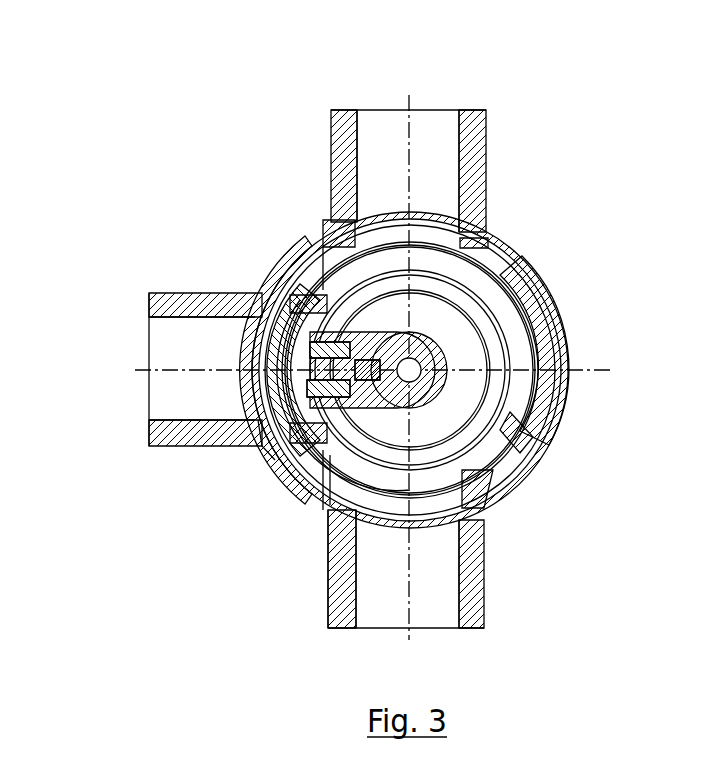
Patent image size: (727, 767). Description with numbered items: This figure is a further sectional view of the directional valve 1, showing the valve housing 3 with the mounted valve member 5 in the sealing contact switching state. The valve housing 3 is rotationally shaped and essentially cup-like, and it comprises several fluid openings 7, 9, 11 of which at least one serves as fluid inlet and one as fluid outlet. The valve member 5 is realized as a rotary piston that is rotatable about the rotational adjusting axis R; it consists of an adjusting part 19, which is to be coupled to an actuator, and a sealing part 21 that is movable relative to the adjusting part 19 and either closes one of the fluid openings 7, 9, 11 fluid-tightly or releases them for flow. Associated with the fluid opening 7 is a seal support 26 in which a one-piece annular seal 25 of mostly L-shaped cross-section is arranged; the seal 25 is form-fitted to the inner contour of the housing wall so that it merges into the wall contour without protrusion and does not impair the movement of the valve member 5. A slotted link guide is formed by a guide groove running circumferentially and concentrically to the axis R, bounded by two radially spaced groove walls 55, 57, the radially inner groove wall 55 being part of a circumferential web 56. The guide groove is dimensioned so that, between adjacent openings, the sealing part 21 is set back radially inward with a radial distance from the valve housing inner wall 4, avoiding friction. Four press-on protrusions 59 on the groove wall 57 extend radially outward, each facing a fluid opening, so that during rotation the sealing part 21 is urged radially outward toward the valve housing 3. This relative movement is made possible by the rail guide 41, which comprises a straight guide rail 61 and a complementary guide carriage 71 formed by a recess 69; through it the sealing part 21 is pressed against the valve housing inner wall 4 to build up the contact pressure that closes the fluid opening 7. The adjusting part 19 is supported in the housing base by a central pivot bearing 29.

The directional valve 1 is at (634, 167).
The valve housing 3 is at (557, 266).
The valve housing inner wall 4 is at (337, 546).
The valve member 5 is at (540, 258).
The fluid opening 7 is at (166, 399).
The fluid opening 9 is at (442, 126).
The fluid opening 11 is at (436, 606).
The adjusting part 19 is at (560, 350).
The sealing part 21 is at (256, 348).
The annular seal 25 is at (480, 232).
The seal support 26 is at (498, 256).
The pivot bearing 29 is at (335, 478).
The rail guide 41 is at (342, 232).
The radially inner groove wall 55 is at (335, 262).
The circumferential web 56 is at (313, 468).
The groove wall 57 is at (431, 323).
The press-on protrusion 59 is at (417, 232).
The guide rail 61 is at (302, 302).
The recess 69 is at (359, 340).
The guide carriage 71 is at (290, 465).
The rotational adjusting axis R is at (545, 335).